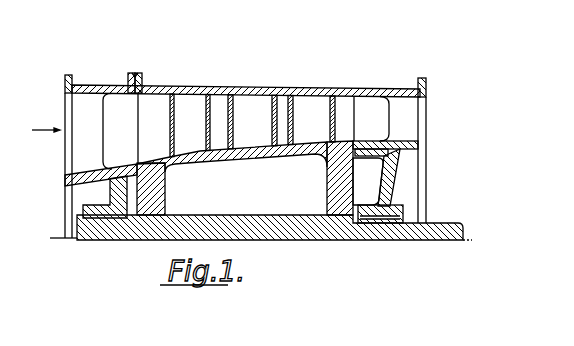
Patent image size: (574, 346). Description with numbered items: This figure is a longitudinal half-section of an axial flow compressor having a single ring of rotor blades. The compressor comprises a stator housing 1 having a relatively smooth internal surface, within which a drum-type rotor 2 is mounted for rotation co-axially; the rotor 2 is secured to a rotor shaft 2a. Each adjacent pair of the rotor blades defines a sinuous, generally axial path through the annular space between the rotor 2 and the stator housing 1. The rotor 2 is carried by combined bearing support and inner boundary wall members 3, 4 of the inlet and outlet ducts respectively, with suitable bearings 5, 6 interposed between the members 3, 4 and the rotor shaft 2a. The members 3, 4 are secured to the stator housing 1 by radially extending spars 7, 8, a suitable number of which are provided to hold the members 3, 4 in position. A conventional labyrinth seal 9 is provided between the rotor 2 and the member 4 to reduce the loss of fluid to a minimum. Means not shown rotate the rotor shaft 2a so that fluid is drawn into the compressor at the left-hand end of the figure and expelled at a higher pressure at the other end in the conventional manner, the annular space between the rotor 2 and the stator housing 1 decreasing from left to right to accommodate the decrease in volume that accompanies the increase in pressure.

The stator housing 1 is at (233, 87).
The rotor 2 is at (148, 113).
The rotor shaft 2a is at (291, 242).
The combined bearing support and inner boundary wall member 3 is at (328, 94).
The combined bearing support and inner boundary wall member 4 is at (397, 173).
The bearing 5 is at (83, 214).
The bearing 6 is at (403, 222).
The radially extending spar 7 is at (71, 106).
The radially extending spar 8 is at (426, 115).
The labyrinth seal 9 is at (388, 152).